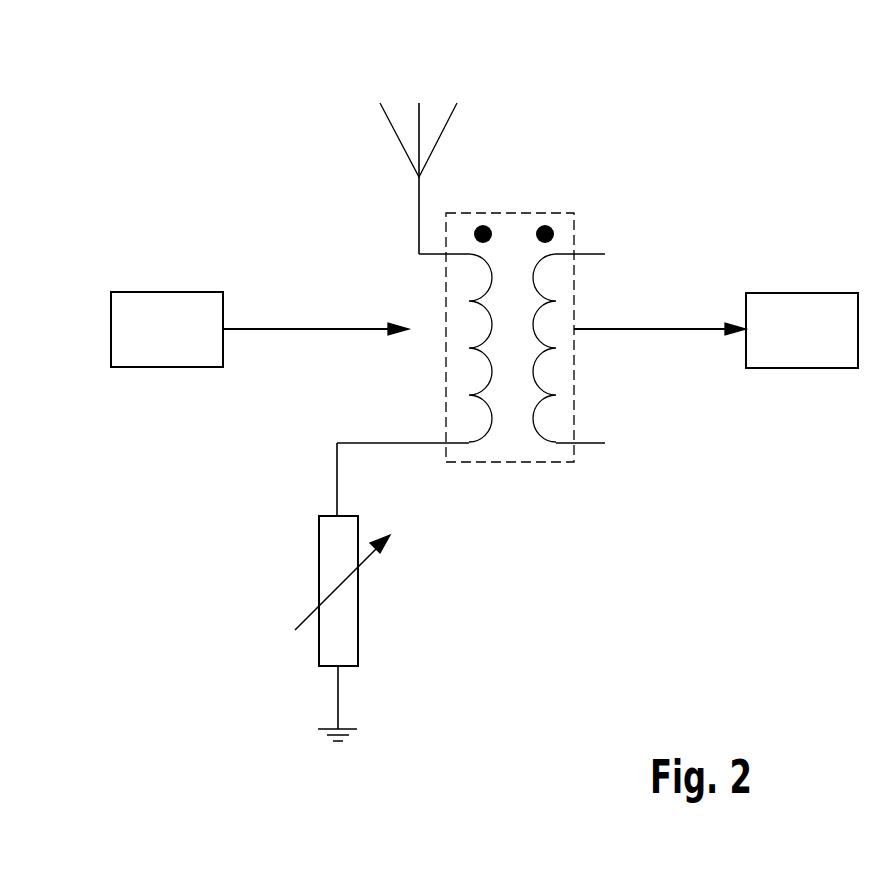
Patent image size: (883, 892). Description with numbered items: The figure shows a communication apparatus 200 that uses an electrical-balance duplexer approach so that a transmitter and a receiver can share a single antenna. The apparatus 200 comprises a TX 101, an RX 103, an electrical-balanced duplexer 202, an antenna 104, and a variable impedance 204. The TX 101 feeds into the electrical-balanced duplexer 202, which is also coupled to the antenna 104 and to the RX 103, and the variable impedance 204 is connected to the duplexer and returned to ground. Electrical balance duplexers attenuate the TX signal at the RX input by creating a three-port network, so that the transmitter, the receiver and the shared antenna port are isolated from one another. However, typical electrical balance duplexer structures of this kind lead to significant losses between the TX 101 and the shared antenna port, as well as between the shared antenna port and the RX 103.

The communication apparatus 200 is at (88, 123).
The TX 101 is at (200, 317).
The RX 103 is at (783, 302).
The antenna 104 is at (419, 177).
The electrical-balanced duplexer 202 is at (573, 462).
The variable impedance 204 is at (357, 592).